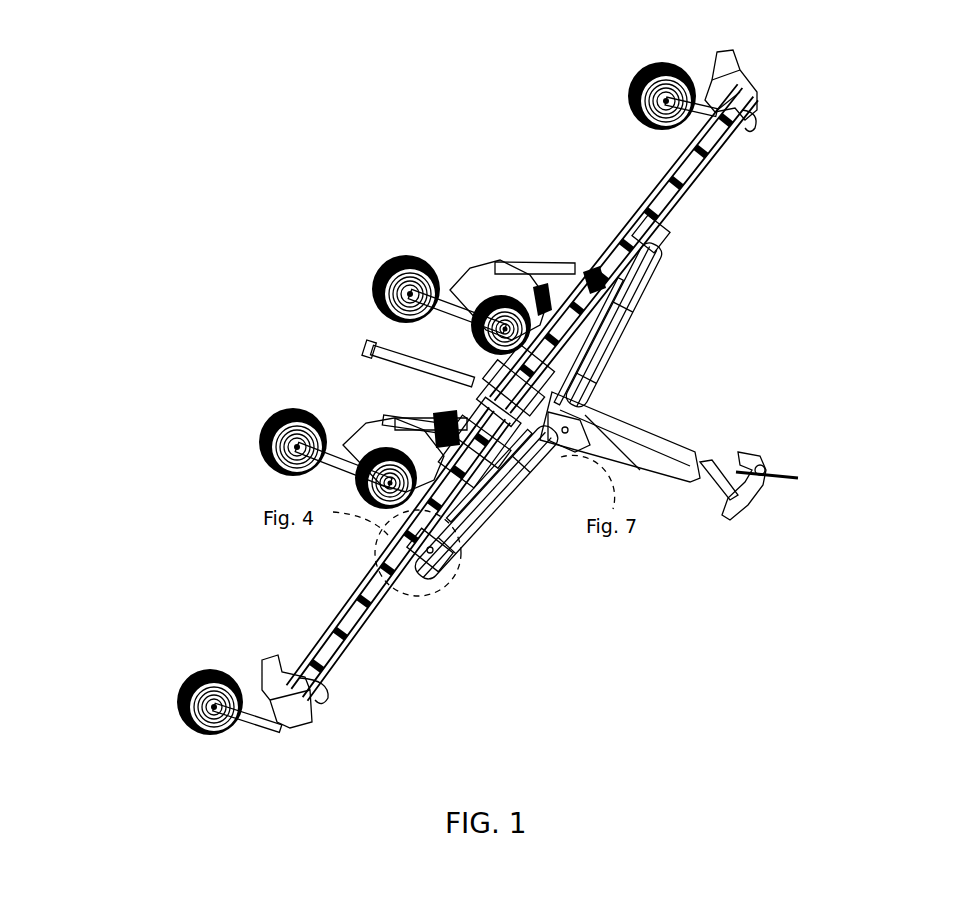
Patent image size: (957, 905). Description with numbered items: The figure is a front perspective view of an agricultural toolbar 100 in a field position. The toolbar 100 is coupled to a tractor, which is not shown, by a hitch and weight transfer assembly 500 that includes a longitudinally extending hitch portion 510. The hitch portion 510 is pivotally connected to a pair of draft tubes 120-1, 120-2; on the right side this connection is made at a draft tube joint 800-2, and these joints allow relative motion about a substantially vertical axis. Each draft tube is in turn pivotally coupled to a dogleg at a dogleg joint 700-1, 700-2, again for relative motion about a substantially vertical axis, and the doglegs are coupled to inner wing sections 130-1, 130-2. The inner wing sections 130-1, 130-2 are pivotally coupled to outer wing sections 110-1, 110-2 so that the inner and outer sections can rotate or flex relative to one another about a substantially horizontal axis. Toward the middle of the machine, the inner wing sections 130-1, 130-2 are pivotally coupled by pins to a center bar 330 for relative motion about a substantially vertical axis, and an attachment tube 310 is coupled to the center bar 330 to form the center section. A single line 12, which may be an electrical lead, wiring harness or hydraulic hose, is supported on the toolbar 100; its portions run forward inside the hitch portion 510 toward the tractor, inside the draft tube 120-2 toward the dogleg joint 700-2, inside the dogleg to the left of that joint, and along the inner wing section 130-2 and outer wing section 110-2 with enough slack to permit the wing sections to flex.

The agricultural toolbar 100 is at (193, 788).
The line 12 is at (765, 468).
The outer wing section 110-1 is at (637, 205).
The outer wing section 110-2 is at (332, 640).
The draft tube 120-1 is at (590, 400).
The draft tube 120-2 is at (462, 548).
The inner wing section 130-1 is at (585, 362).
The inner wing section 130-2 is at (510, 440).
The attachment tube 310 is at (365, 343).
The center bar 330 is at (383, 415).
The hitch and weight transfer assembly 500 is at (747, 523).
The hitch portion 510 is at (650, 477).
The dogleg joint 700-1 is at (683, 233).
The dogleg joint 700-2 is at (418, 598).
The draft tube joint 800-2 is at (572, 458).